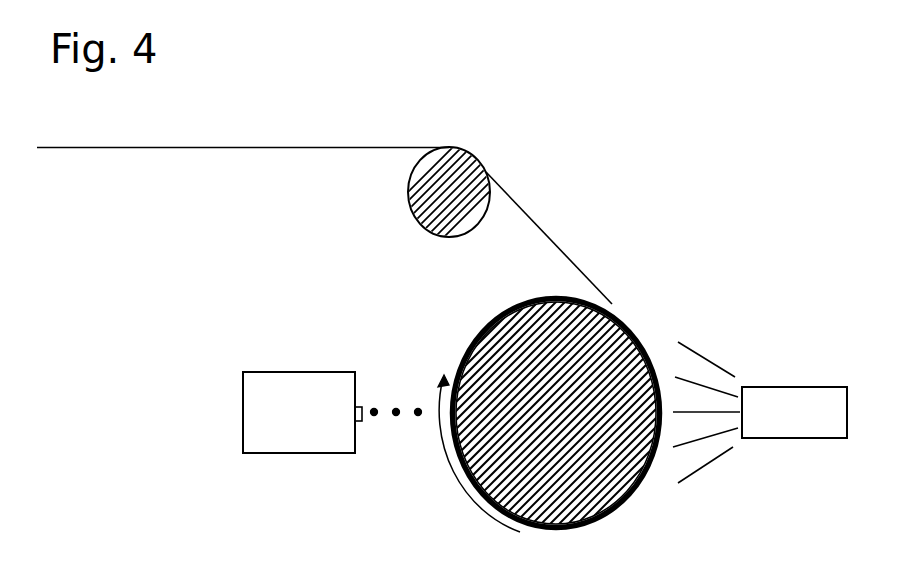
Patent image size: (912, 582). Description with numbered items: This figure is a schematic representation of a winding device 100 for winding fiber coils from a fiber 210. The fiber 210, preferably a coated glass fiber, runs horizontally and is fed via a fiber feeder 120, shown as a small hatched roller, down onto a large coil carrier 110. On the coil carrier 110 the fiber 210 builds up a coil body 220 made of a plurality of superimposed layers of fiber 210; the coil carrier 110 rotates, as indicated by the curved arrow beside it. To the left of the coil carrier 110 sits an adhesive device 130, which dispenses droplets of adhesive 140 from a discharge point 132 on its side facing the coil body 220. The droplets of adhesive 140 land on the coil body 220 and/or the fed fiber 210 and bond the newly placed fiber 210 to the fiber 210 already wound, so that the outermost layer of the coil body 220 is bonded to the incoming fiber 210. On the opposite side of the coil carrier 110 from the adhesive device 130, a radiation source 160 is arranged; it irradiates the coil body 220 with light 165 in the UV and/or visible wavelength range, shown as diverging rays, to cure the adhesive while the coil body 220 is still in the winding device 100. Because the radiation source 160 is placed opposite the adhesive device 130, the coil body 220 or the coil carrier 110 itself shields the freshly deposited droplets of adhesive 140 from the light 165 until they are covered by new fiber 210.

The winding device 100 is at (357, 75).
The fiber 210 is at (196, 147).
The fiber feeder 120 is at (467, 177).
The coil carrier 110 is at (607, 473).
The coil body 220 is at (500, 320).
The adhesive device 130 is at (242, 413).
The discharge point 132 is at (357, 405).
The droplets of adhesive 140 is at (393, 415).
The radiation source 160 is at (795, 387).
The light 165 is at (698, 352).